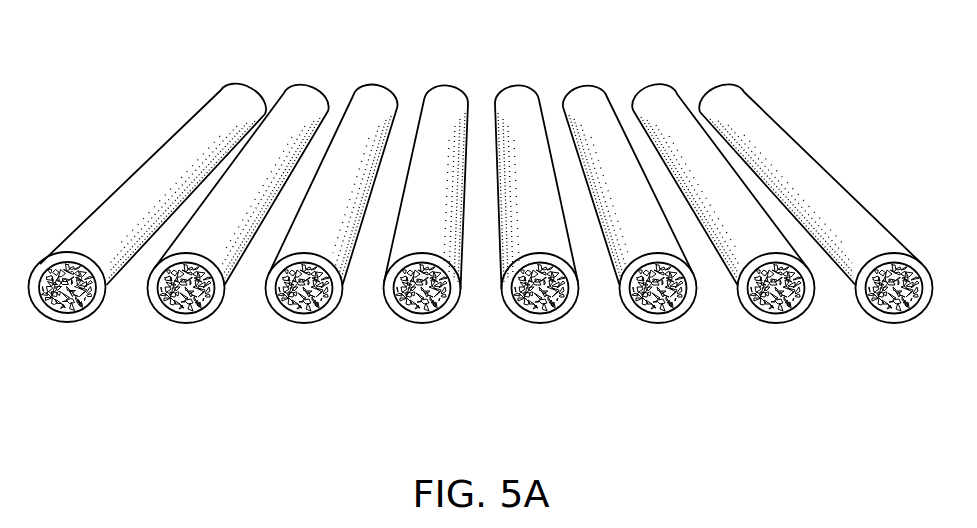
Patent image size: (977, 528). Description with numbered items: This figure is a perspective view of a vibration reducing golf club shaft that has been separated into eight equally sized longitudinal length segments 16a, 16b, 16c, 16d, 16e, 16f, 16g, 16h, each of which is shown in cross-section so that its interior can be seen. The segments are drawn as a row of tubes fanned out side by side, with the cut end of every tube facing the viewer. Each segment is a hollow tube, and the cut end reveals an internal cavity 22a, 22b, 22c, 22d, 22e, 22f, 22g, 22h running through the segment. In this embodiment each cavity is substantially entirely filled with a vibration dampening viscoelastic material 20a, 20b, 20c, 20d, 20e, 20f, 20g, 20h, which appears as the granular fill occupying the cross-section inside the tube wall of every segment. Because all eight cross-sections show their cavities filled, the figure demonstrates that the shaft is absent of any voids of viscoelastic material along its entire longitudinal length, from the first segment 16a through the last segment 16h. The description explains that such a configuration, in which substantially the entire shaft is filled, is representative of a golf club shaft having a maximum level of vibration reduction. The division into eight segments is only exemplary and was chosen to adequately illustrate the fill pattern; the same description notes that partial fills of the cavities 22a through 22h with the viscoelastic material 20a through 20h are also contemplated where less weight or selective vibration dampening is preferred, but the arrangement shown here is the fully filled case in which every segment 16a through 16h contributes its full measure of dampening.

The longitudinal length segment 16a is at (238, 92).
The longitudinal length segment 16b is at (303, 90).
The longitudinal length segment 16c is at (375, 90).
The longitudinal length segment 16d is at (445, 90).
The longitudinal length segment 16e is at (517, 95).
The longitudinal length segment 16f is at (592, 92).
The longitudinal length segment 16g is at (655, 95).
The longitudinal length segment 16h is at (732, 97).
The viscoelastic material 20a is at (55, 303).
The viscoelastic material 20b is at (170, 303).
The viscoelastic material 20c is at (287, 303).
The viscoelastic material 20d is at (404, 303).
The viscoelastic material 20e is at (518, 303).
The viscoelastic material 20f is at (638, 303).
The viscoelastic material 20g is at (754, 303).
The viscoelastic material 20h is at (869, 303).
The internal cavity 22a is at (102, 291).
The internal cavity 22b is at (218, 291).
The internal cavity 22c is at (335, 291).
The internal cavity 22d is at (450, 291).
The internal cavity 22e is at (568, 291).
The internal cavity 22f is at (690, 291).
The internal cavity 22g is at (805, 289).
The internal cavity 22h is at (924, 289).